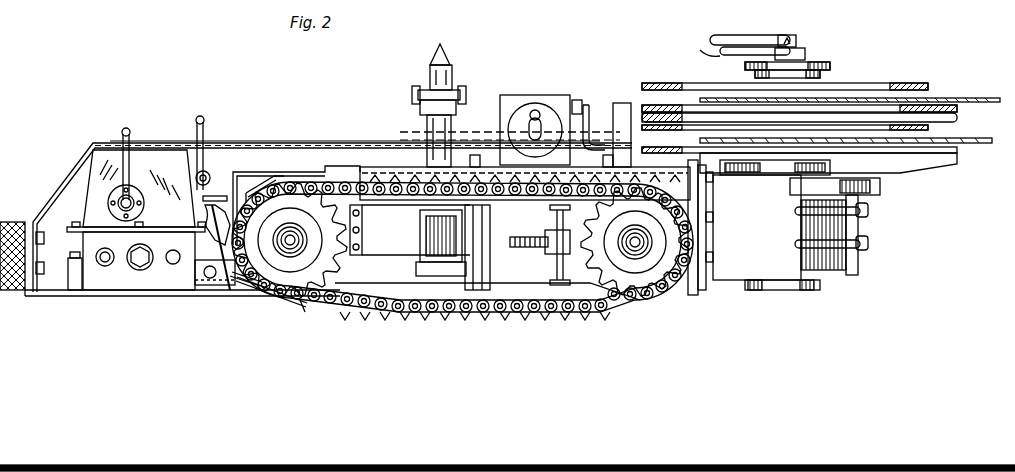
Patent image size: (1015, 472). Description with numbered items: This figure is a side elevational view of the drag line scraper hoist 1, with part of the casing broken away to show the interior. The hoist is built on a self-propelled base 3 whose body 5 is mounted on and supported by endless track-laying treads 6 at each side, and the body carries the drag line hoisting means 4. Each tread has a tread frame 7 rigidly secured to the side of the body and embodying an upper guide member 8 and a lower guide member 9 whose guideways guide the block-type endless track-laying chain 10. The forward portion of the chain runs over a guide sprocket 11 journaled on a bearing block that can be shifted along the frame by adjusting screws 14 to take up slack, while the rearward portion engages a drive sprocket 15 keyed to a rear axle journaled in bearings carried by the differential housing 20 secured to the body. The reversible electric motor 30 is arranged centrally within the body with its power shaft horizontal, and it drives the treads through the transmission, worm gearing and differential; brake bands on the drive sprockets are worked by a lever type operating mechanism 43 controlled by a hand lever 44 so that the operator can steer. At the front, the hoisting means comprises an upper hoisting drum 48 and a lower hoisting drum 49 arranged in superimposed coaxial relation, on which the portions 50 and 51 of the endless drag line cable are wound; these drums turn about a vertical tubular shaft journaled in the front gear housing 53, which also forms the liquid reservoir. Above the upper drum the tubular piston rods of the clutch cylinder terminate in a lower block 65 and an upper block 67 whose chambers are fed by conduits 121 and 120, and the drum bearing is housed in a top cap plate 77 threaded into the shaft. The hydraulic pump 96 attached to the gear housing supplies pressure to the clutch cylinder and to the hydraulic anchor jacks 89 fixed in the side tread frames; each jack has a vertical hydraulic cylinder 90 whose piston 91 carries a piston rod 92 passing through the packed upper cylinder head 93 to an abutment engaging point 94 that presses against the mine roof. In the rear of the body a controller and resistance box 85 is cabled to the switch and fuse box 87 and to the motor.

The drag line scraper hoist 1 is at (231, 140).
The self-propelled base 3 is at (95, 296).
The drag line hoisting means 4 is at (929, 80).
The body 5 is at (75, 165).
The endless track-laying treads 6 is at (290, 180).
The tread frames 7 is at (330, 300).
The upper guide member 8 is at (400, 183).
The lower guide member 9 is at (430, 310).
The endless track-laying chains 10 is at (275, 305).
The guide sprockets 11 is at (648, 297).
The adjusting screws 14 is at (540, 282).
The drive sprockets 15 is at (240, 292).
The differential housing 20 is at (240, 172).
The motor 30 is at (508, 262).
The lever type operating mechanism 43 is at (200, 240).
The hand lever 44 is at (204, 132).
The upper hoisting drum 48 is at (885, 83).
The lower hoisting drum 49 is at (893, 148).
The drag line cable portion 50 is at (948, 98).
The drag line cable portion 51 is at (978, 145).
The front gear housing 53 is at (775, 262).
The lower block 65 is at (805, 52).
The upper block 67 is at (796, 40).
The top cap plate 77 is at (820, 65).
The controller and resistance box 85 is at (143, 160).
The switch and fuse box 87 is at (550, 108).
The hydraulic anchor jacks 89 is at (422, 122).
The vertical hydraulic cylinder 90 is at (447, 135).
The piston 91 is at (375, 315).
The piston rod 92 is at (450, 68).
The upper cylinder head 93 is at (418, 98).
The abutment engaging point 94 is at (433, 52).
The hydraulic pump 96 is at (870, 240).
The conduit 120 is at (735, 45).
The conduit 121 is at (705, 55).